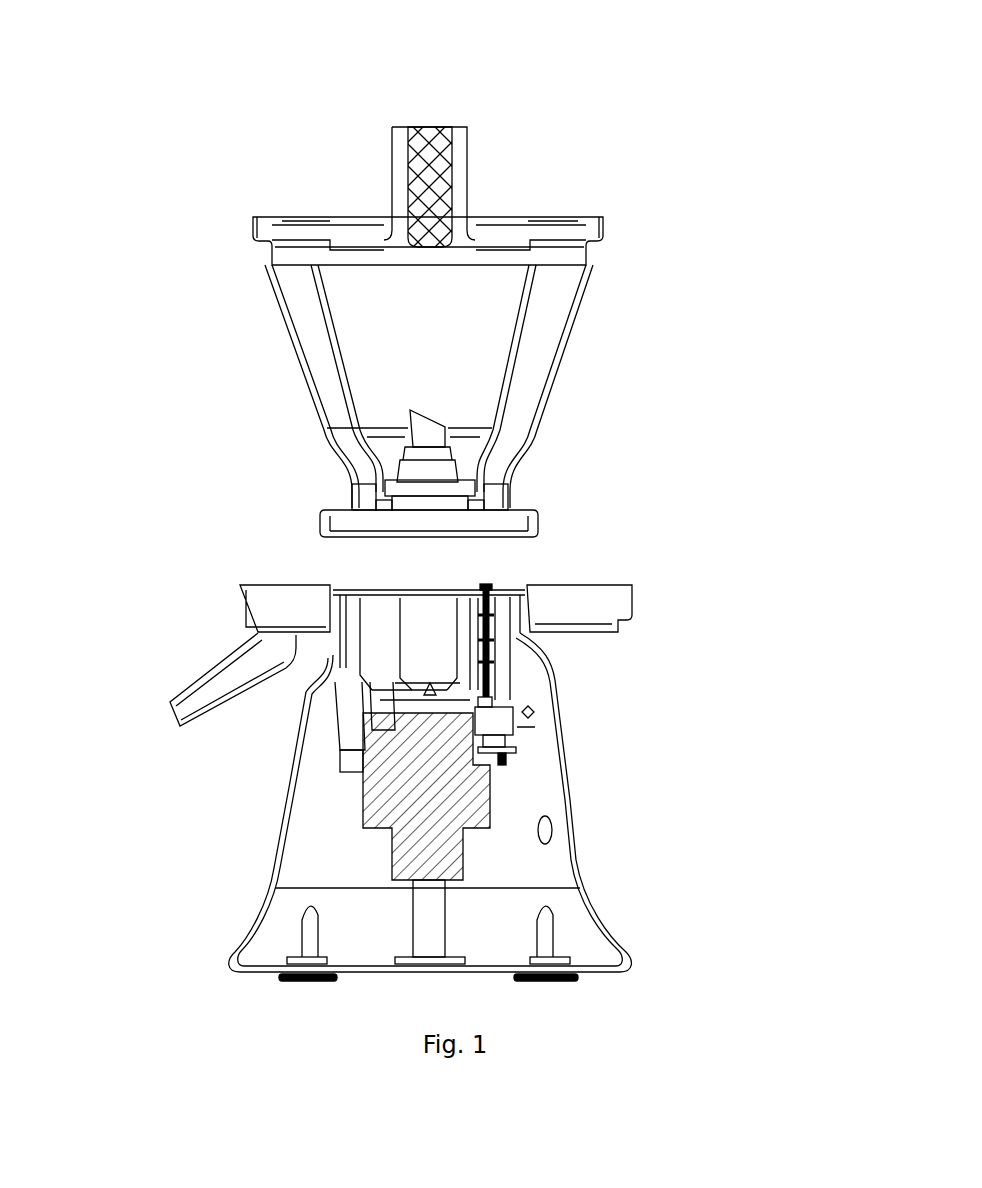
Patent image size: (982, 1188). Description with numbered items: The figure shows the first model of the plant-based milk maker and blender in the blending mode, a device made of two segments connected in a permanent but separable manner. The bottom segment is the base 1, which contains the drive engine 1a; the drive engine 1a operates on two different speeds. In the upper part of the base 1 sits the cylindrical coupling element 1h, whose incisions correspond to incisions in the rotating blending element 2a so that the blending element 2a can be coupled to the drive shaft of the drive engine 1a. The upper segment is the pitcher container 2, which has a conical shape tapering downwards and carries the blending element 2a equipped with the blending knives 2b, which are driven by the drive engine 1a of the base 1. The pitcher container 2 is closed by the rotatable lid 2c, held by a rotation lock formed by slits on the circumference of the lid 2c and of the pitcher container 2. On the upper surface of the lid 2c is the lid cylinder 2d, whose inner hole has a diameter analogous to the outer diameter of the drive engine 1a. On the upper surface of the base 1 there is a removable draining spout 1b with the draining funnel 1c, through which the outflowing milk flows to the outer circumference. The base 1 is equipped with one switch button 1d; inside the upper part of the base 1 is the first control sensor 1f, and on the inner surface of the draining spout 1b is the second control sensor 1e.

The base 1 is at (583, 860).
The drive engine 1a is at (472, 818).
The draining spout 1b is at (288, 608).
The draining funnel 1c is at (232, 670).
The switch button 1d is at (551, 825).
The second control sensor 1e is at (631, 620).
The first control sensor 1f is at (487, 590).
The cylindrical coupling element 1h is at (422, 630).
The pitcher container 2 is at (563, 358).
The blending element 2a is at (440, 465).
The blending knives 2b is at (440, 427).
The rotatable lid 2c is at (560, 218).
The lid cylinder 2d is at (462, 140).